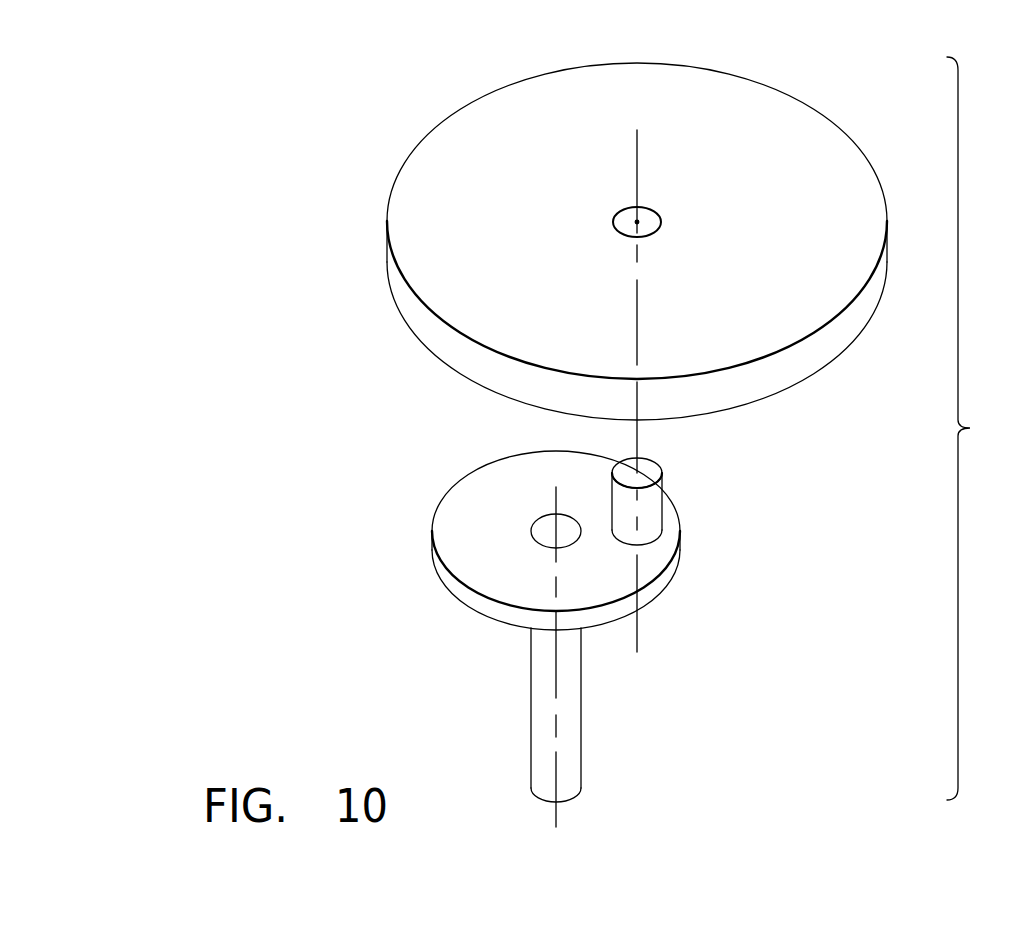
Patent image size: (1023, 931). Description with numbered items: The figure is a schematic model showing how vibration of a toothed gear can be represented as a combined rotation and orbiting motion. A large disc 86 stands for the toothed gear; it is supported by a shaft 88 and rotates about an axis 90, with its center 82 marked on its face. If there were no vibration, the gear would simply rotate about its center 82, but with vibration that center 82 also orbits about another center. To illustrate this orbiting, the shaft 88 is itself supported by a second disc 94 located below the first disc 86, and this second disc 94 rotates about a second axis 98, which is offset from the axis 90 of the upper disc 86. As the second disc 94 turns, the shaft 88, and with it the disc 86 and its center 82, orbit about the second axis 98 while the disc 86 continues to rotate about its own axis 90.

The disc 86 is at (823, 113).
The center 82 is at (640, 222).
The shaft 88 is at (662, 483).
The second disc 94 is at (681, 551).
The axis 90 is at (641, 630).
The second axis 98 is at (557, 672).